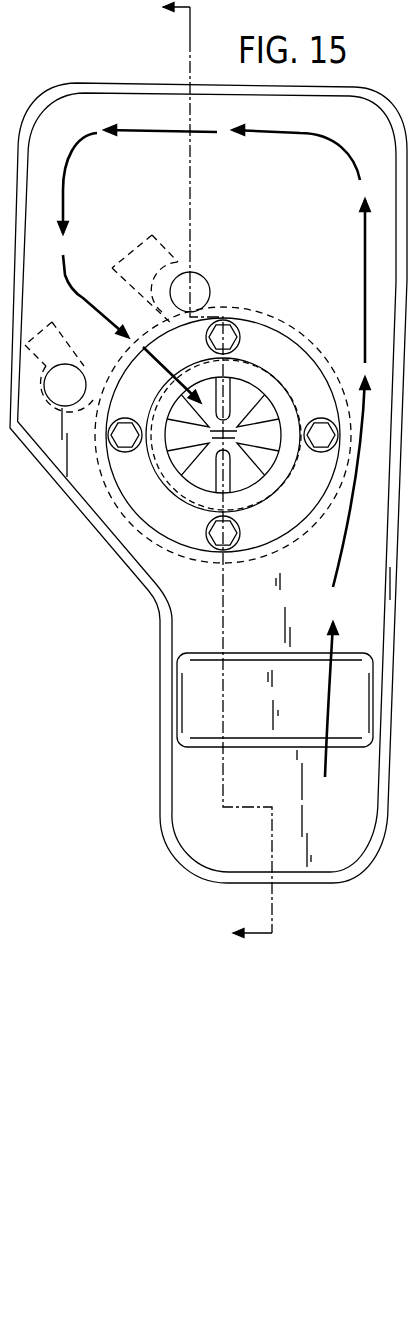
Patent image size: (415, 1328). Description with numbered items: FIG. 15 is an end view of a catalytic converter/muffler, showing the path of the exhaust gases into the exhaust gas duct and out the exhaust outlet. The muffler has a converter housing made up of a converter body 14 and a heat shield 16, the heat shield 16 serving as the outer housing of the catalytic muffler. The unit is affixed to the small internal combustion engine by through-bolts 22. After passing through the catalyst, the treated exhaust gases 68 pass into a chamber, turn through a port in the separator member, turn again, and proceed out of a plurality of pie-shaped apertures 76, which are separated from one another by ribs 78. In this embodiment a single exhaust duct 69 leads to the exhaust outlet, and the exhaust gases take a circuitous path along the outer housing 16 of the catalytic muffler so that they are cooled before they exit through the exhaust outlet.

The converter body 14 is at (217, 470).
The heat shield 16 is at (305, 205).
The through-bolts 22 is at (203, 293).
The treated exhaust gases 68 is at (363, 255).
The exhaust duct 69 is at (77, 322).
The pie-shaped apertures 76 is at (248, 400).
The ribs 78 is at (185, 460).